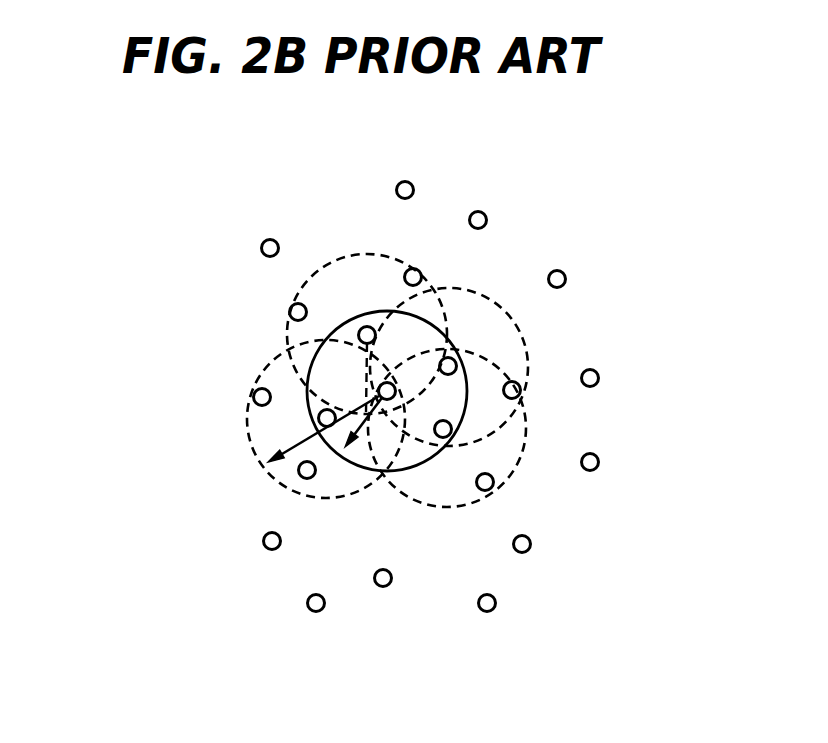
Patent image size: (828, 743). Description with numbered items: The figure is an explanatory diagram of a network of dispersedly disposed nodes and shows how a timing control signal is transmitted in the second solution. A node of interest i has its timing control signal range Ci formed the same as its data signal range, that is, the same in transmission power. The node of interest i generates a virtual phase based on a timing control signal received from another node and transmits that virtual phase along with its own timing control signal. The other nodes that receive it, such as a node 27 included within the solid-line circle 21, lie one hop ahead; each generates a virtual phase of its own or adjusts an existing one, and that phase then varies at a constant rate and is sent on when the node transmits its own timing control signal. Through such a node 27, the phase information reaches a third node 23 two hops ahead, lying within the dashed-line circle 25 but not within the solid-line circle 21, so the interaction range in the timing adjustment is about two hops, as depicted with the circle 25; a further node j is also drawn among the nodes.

The solid-line circle 21 is at (517, 399).
The node 23 is at (290, 308).
The dashed-line circle 25 is at (333, 257).
The node 27 is at (358, 330).
The node of interest i is at (394, 381).
The point j is at (319, 418).
The timing control signal range Ci is at (375, 311).